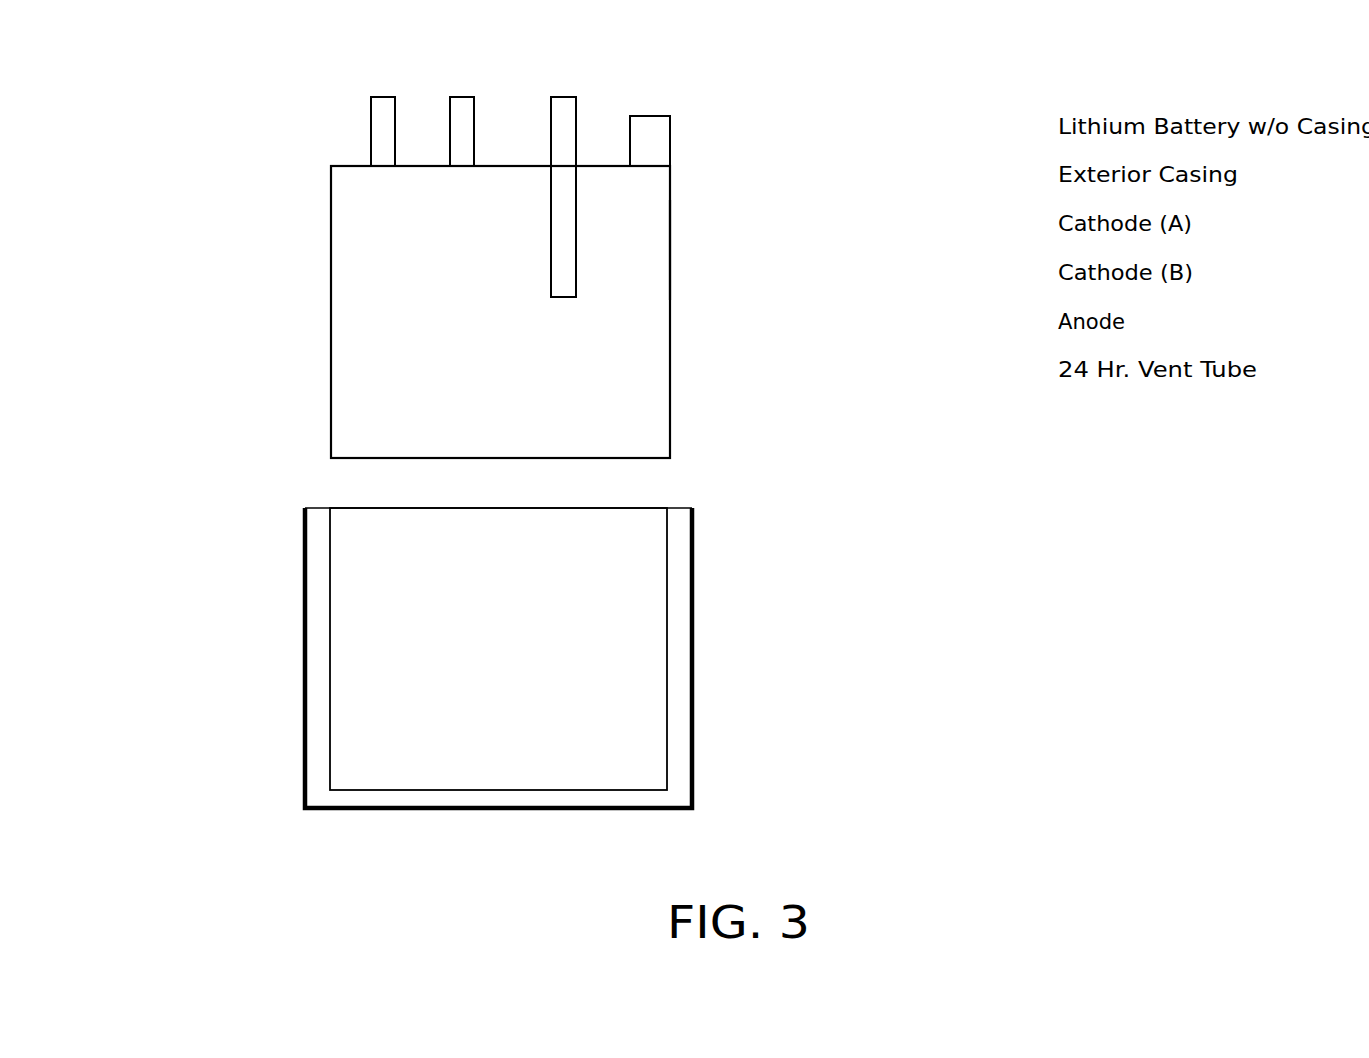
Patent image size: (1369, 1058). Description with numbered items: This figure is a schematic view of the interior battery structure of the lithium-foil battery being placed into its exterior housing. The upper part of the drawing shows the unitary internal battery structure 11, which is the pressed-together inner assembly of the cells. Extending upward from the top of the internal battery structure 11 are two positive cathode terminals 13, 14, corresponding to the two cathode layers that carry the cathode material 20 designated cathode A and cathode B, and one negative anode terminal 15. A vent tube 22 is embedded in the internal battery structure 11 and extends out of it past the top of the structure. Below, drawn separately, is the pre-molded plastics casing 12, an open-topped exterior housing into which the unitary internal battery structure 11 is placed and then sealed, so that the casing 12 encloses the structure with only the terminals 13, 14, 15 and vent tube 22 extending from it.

The internal battery structure 11 is at (679, 286).
The casing 12 is at (282, 628).
The positive (cathode) terminal 13 is at (348, 115).
The positive (cathode) terminal 14 is at (428, 111).
The negative (anode) terminal 15 is at (703, 116).
The cathode material 20 is at (703, 247).
The vent tube 22 is at (602, 84).